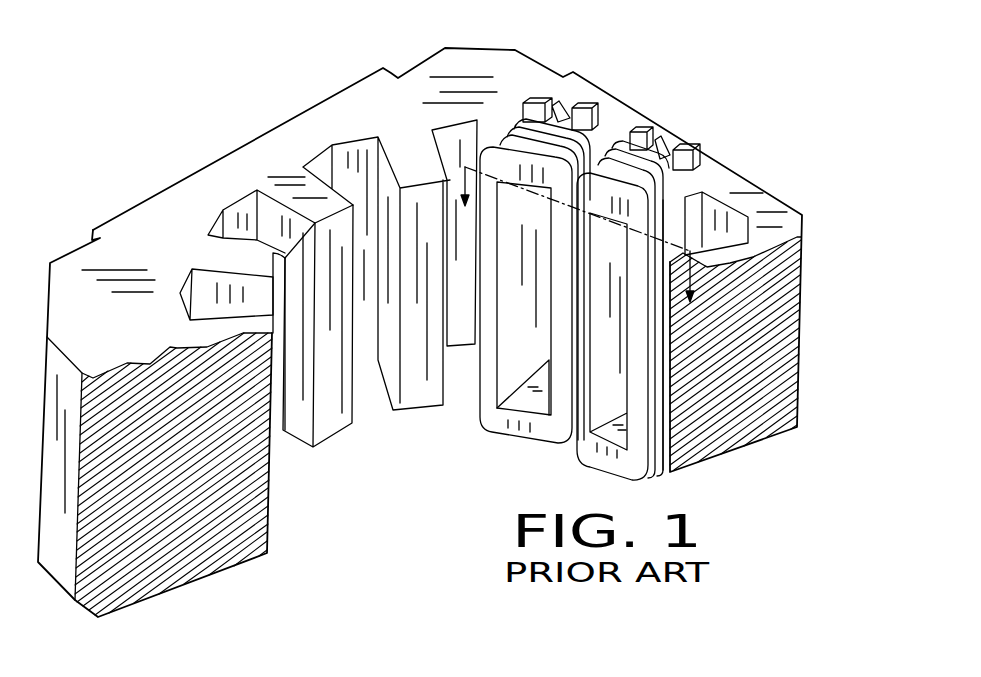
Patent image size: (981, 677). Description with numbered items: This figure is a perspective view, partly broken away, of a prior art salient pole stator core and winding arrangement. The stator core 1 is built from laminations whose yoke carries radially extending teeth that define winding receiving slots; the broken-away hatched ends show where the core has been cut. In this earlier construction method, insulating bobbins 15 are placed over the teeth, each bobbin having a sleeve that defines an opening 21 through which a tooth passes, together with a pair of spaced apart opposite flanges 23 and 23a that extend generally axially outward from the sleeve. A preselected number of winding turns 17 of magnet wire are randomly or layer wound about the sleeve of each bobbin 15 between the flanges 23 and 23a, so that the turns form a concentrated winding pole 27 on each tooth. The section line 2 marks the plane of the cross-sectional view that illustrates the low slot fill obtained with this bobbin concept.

The stator core 1 is at (768, 227).
The section line 2- 2 is at (575, 247).
The bobbin 15 is at (512, 167).
The winding turns 17 is at (651, 193).
The opening 21 is at (497, 370).
The flange 23 is at (598, 180).
The flange 23a is at (617, 138).
The concentrated winding pole 27 is at (600, 197).